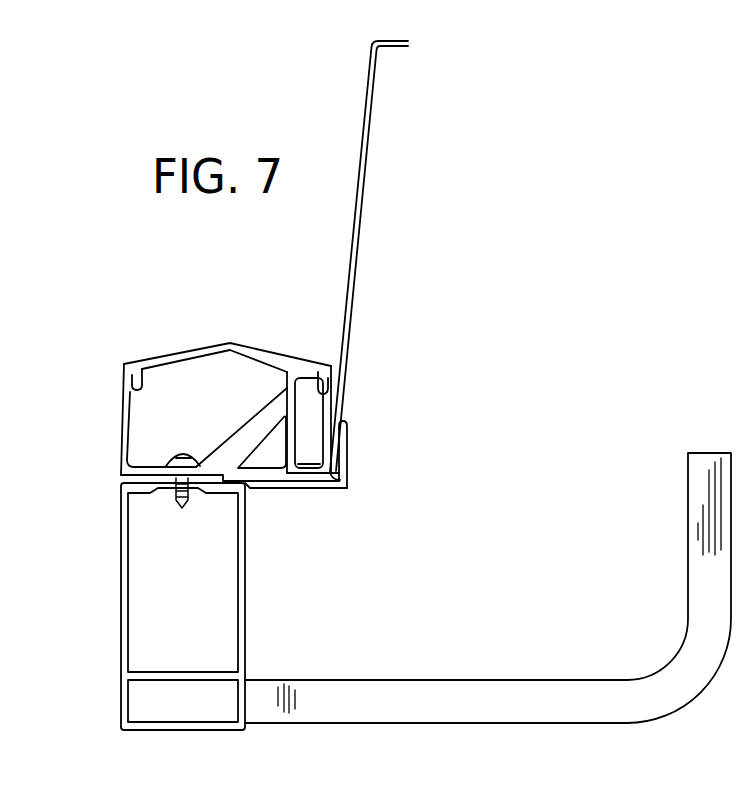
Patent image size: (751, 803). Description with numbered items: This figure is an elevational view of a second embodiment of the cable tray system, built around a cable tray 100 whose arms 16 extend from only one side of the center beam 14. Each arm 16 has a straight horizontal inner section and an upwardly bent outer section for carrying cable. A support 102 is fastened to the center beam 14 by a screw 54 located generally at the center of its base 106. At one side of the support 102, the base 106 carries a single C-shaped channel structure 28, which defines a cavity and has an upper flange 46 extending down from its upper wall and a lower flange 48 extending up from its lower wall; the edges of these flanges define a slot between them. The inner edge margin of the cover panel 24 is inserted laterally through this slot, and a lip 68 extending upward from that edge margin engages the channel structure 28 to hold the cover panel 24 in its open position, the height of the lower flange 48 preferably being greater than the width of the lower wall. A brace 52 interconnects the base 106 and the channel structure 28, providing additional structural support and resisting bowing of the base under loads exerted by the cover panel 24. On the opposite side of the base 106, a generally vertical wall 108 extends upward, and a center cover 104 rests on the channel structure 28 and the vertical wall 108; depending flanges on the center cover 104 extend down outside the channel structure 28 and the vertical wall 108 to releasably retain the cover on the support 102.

The center beam 14 is at (121, 618).
The arm 16 is at (488, 613).
The cover panel 24 is at (357, 195).
The C-shaped channel structure 28 is at (347, 484).
The upper flange 46 is at (330, 382).
The lower flange 48 is at (342, 440).
The brace 52 is at (257, 427).
The screw 54 is at (180, 497).
The lip 68 is at (315, 474).
The cable tray 100 is at (250, 680).
The support 102 is at (224, 426).
The center cover 104 is at (180, 345).
The base 106 is at (270, 490).
The vertical wall 108 is at (134, 417).